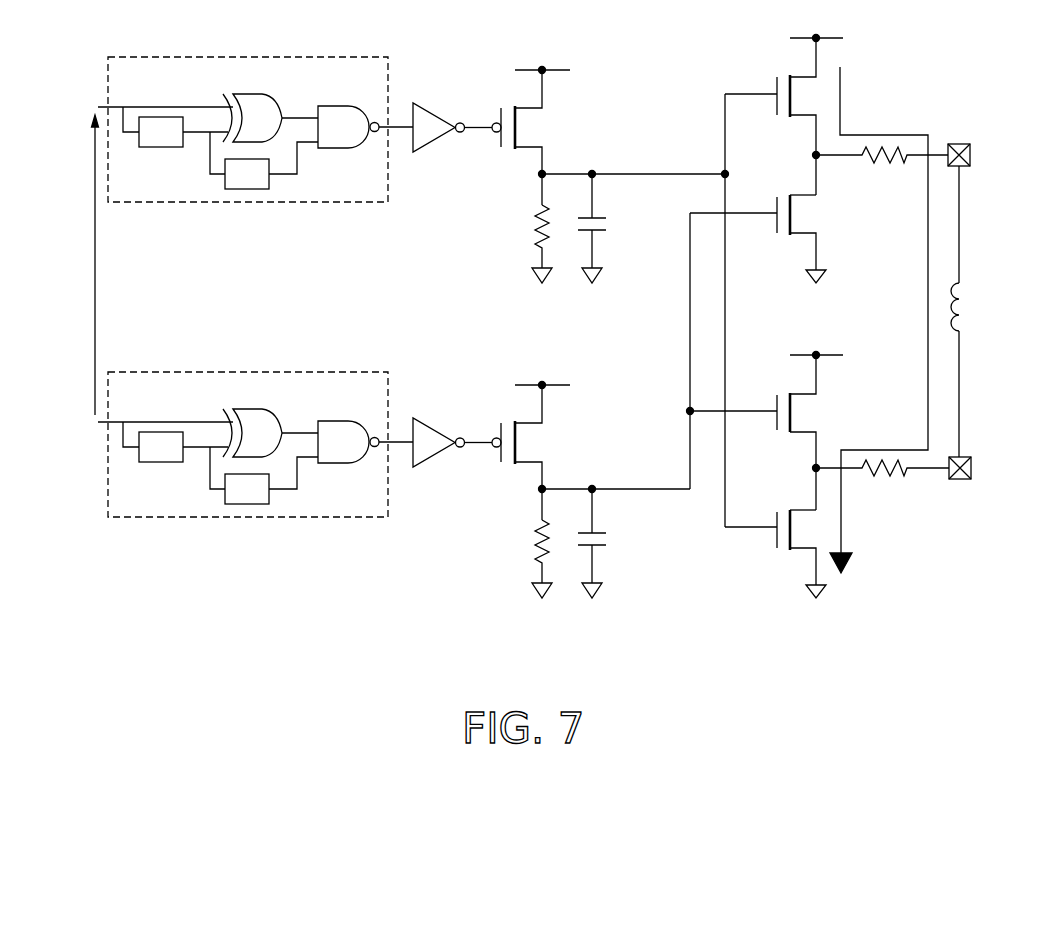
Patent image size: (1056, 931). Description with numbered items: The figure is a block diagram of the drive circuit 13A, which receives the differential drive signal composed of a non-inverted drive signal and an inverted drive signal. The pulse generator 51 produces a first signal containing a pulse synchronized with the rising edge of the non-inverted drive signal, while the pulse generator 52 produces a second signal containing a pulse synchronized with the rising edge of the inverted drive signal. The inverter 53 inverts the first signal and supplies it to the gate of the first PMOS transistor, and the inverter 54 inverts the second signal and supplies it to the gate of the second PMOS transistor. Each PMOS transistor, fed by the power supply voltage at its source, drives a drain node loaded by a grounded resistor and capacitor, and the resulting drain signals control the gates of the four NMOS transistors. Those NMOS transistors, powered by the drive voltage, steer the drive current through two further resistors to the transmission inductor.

The pulse generator 51 is at (250, 57).
The pulse generator 52 is at (255, 419).
The inverter 53 is at (431, 147).
The inverter 54 is at (440, 463).
The drive circuit 13A is at (541, 345).